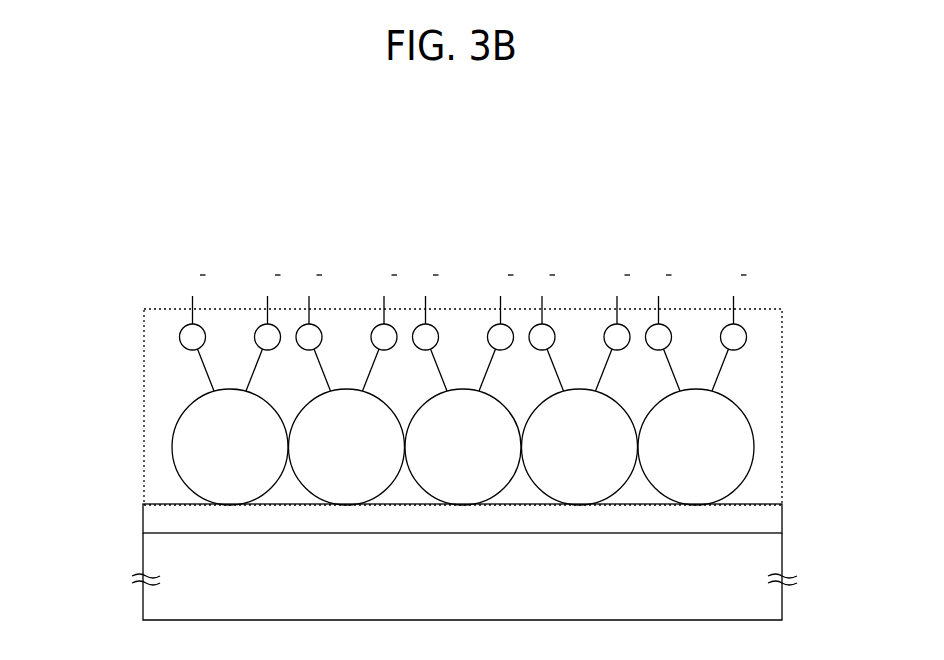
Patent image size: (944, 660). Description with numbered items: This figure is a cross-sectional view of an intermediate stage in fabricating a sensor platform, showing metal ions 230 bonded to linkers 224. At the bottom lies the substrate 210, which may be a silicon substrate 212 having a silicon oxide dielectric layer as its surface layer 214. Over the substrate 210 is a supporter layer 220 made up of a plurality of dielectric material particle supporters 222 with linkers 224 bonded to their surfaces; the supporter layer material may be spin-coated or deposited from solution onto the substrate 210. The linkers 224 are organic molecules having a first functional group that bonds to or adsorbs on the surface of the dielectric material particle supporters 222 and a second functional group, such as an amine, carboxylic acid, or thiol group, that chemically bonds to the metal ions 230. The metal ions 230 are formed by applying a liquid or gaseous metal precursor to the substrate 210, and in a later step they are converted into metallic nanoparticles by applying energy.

The substrate 210 is at (507, 562).
The silicon substrate 212 is at (484, 576).
The surface layer 214 is at (781, 518).
The supporter layer 220 is at (410, 407).
The dielectric material particle supporters 222 is at (183, 443).
The linkers 224 is at (417, 357).
The metal ions 230 is at (733, 273).